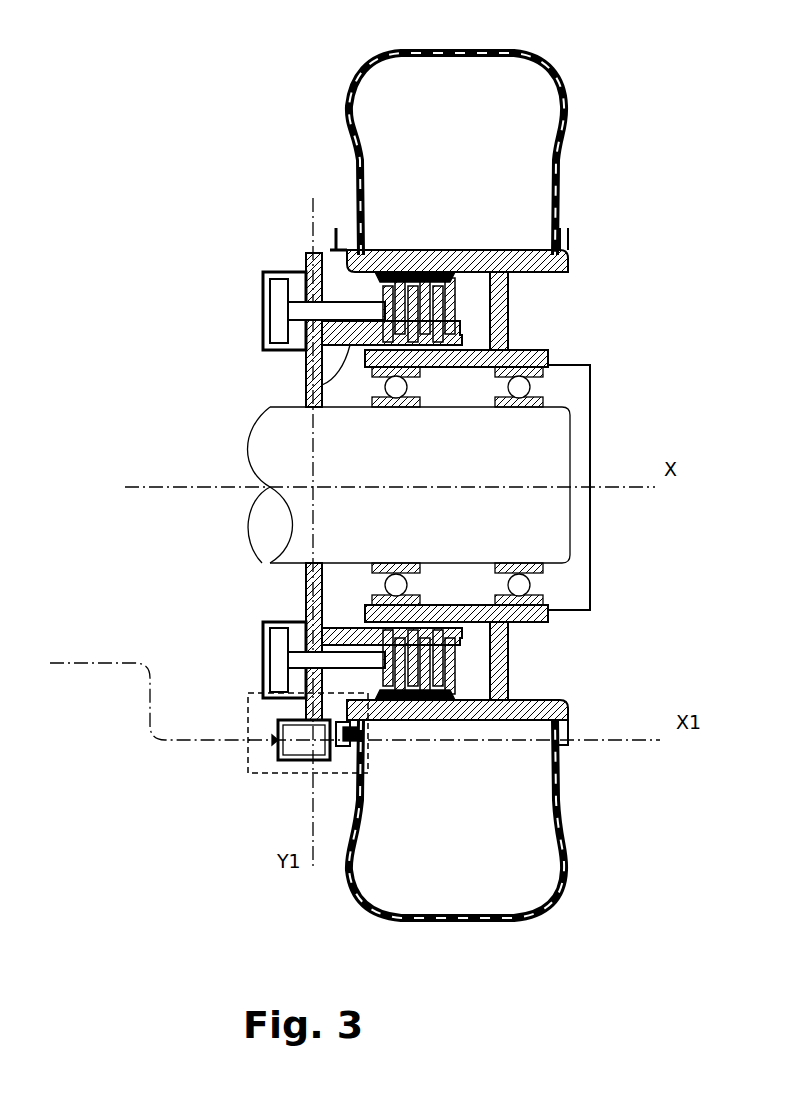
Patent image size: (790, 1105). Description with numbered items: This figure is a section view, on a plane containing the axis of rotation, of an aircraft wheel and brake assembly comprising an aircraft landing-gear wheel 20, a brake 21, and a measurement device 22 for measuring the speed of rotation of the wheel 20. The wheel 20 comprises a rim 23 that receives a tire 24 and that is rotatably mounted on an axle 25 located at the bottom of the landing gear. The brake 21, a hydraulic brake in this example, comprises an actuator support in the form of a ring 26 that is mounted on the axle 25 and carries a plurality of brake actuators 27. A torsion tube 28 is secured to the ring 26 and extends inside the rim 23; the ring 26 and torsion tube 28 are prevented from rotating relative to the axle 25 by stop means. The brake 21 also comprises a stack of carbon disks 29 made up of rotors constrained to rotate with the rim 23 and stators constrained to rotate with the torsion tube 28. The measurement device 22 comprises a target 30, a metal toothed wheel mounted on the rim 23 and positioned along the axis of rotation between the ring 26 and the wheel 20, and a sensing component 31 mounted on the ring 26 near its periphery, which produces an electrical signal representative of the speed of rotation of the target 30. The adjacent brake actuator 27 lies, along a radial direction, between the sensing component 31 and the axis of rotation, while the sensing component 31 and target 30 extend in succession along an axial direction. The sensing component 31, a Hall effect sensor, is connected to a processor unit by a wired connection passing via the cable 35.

The aircraft landing-gear wheel 20 is at (500, 471).
The brake 21 is at (324, 424).
The measurement device 22 is at (308, 766).
The rim 23 is at (410, 255).
The tire 24 is at (533, 190).
The axle 25 is at (292, 570).
The ring 26 is at (306, 362).
The brake actuators 27 is at (263, 312).
The torsion tube 28 is at (318, 385).
The stack of carbon disks 29 is at (455, 300).
The target 30 is at (350, 748).
The sensing component 31 is at (280, 730).
The cable 35 is at (186, 742).